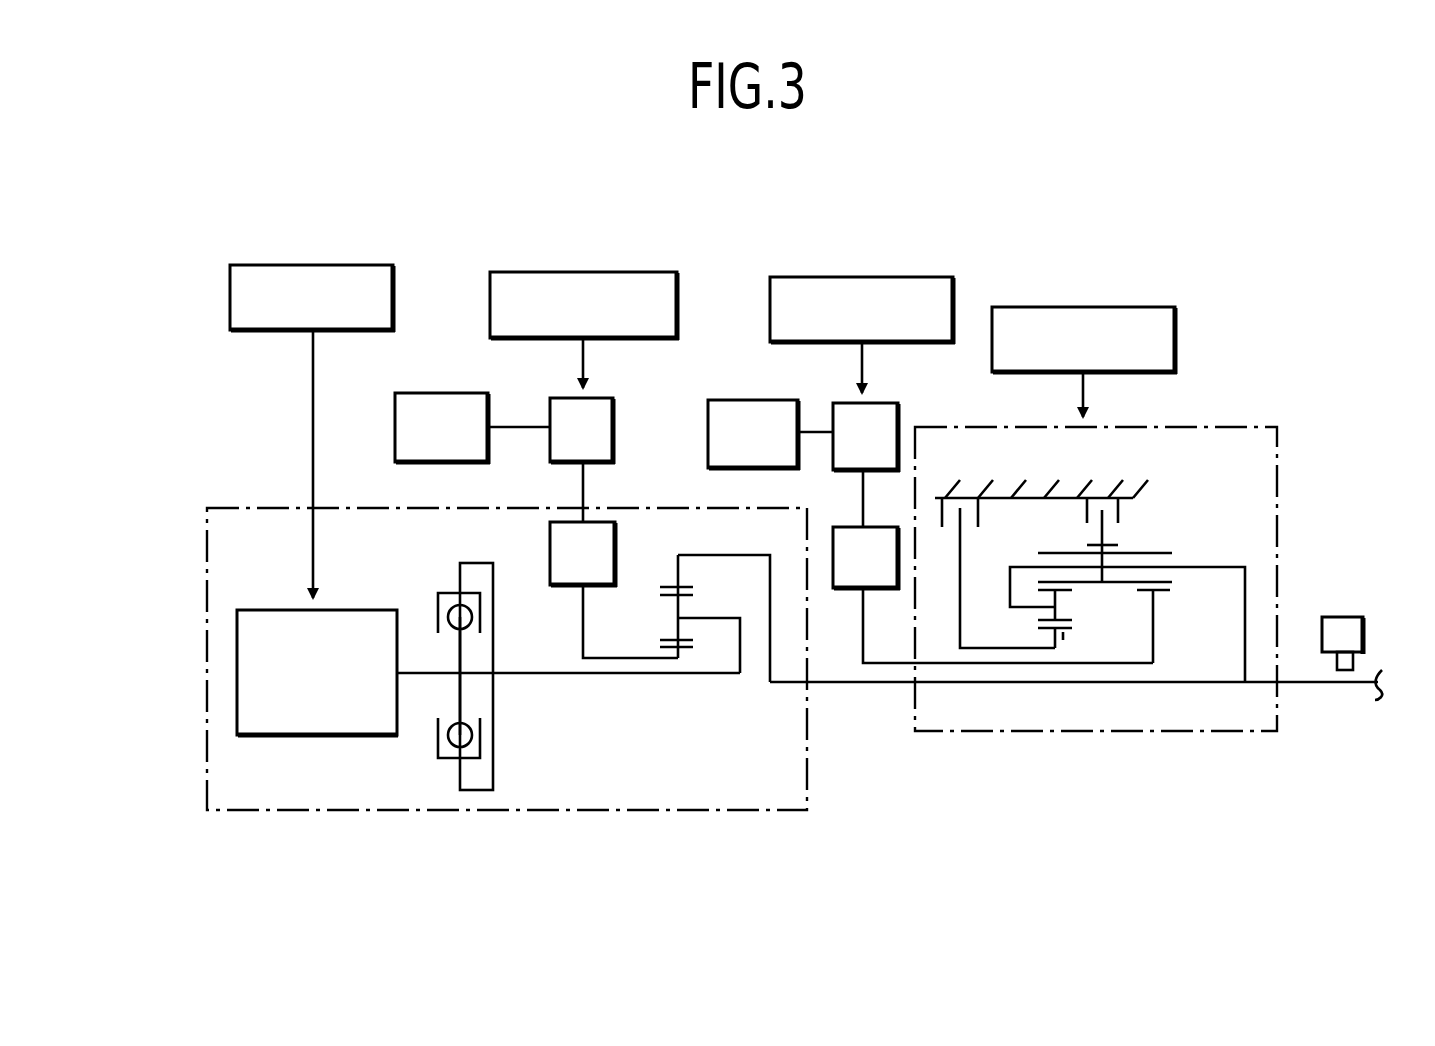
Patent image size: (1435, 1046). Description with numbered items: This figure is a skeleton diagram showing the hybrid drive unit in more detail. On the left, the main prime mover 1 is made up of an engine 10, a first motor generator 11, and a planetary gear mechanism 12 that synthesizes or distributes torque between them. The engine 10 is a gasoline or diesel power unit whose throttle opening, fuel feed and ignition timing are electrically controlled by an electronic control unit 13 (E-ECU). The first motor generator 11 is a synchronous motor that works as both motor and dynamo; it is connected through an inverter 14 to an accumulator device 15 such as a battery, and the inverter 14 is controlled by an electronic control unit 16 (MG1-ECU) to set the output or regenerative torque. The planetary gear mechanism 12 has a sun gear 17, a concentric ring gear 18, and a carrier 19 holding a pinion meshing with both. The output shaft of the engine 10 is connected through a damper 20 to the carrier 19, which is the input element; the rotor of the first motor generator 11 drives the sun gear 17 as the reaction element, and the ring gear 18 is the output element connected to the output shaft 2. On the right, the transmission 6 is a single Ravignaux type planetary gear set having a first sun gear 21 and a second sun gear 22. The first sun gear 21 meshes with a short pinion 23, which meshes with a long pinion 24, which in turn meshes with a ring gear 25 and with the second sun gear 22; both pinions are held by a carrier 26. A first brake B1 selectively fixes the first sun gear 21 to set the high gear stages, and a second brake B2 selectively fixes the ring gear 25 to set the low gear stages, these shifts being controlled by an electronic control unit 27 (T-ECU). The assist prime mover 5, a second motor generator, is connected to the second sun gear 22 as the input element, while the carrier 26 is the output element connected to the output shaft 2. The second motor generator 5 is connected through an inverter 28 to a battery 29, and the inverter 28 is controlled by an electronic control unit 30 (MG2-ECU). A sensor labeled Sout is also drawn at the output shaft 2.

The main prime mover 1 is at (696, 812).
The output shaft 2 is at (1308, 685).
The assist prime mover 5 is at (840, 590).
The transmission 6 is at (1280, 442).
The engine 10 is at (356, 737).
The first motor generator 11 is at (550, 545).
The planetary gear mechanism 12 is at (652, 690).
The electronic control unit (E-ECU) 13 is at (374, 266).
The inverter 14 is at (603, 398).
The accumulator device 15 is at (448, 393).
The electronic control unit (MG1-ECU) 16 is at (636, 272).
The sun gear 17 is at (687, 651).
The ring gear 18 is at (668, 584).
The carrier 19 is at (712, 598).
The damper 20 is at (447, 759).
The first sun gear 21 is at (1068, 634).
The second sun gear 22 is at (1160, 593).
The short pinion 23 is at (1066, 620).
The long pinion 24 is at (1050, 553).
The ring gear 25 is at (1113, 545).
The carrier 26 is at (1213, 567).
The electronic control unit (T-ECU) 27 is at (1150, 307).
The inverter 28 is at (889, 403).
The battery 29 is at (764, 400).
The electronic control unit (MG2-ECU) 30 is at (936, 277).
The first brake B1 is at (972, 488).
The second brake B2 is at (1122, 490).
The output shaft speed sensor Sout is at (1350, 617).